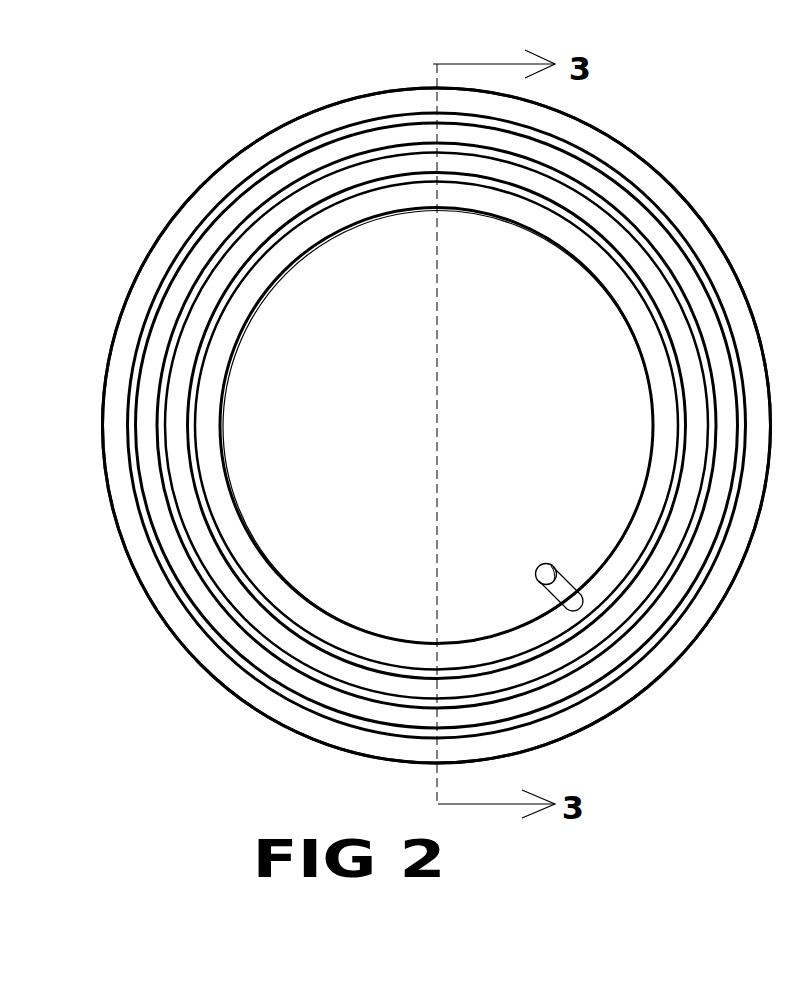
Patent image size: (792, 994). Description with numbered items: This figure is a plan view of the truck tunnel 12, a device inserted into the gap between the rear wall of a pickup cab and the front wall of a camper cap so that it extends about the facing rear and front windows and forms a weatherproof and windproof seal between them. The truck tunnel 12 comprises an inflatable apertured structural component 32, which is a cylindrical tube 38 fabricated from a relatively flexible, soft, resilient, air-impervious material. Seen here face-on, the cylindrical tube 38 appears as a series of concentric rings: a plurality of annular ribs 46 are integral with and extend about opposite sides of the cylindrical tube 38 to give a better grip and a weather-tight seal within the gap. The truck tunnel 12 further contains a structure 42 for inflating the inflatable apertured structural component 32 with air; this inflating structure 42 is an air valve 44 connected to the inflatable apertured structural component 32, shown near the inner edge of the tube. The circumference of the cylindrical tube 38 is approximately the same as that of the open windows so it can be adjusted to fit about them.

The truck tunnel 12 is at (193, 169).
The inflatable apertured structural component 32 is at (666, 169).
The cylindrical tube 38 is at (233, 680).
The annular ribs 46 is at (700, 343).
The inflating structure 42 is at (575, 566).
The air valve 44 is at (548, 591).